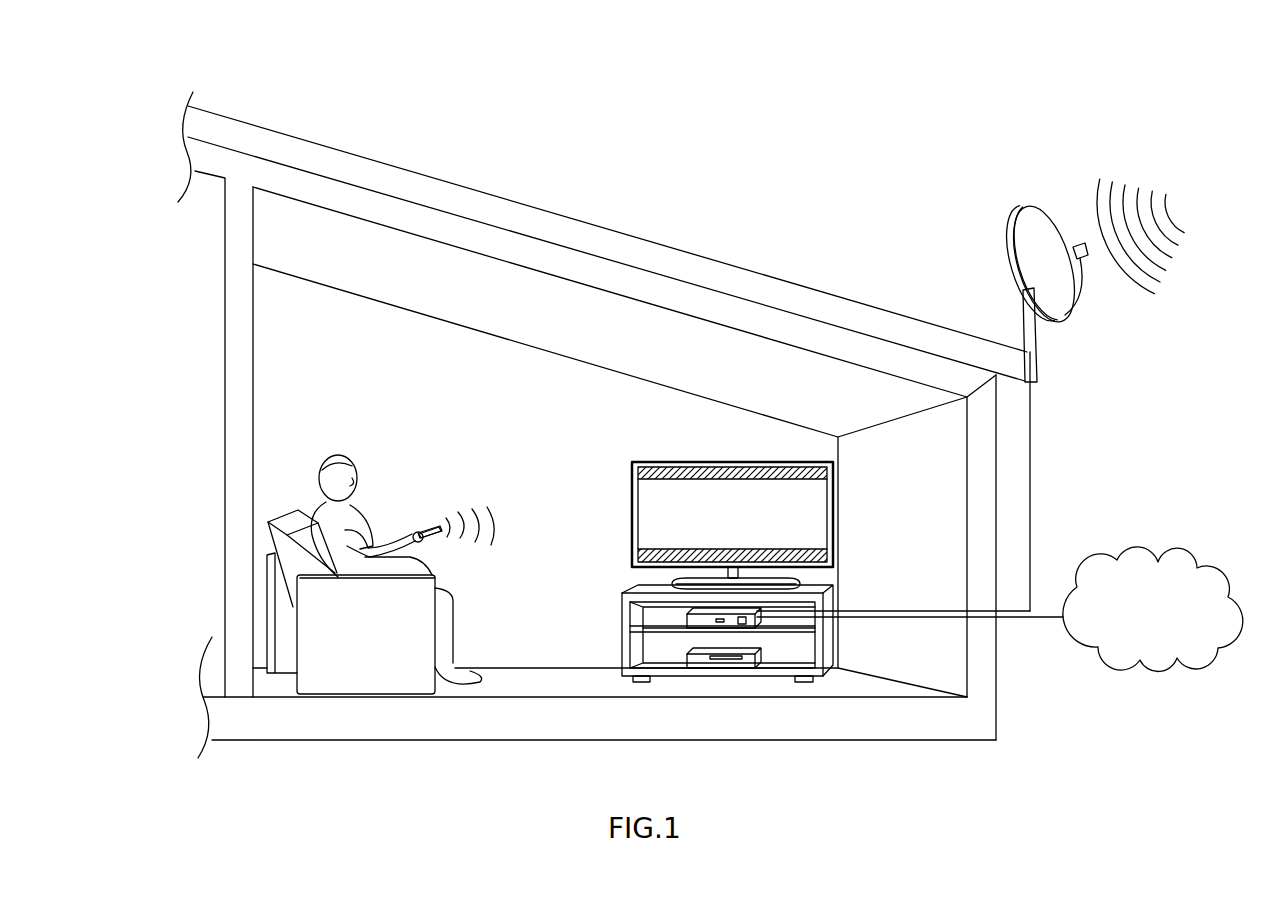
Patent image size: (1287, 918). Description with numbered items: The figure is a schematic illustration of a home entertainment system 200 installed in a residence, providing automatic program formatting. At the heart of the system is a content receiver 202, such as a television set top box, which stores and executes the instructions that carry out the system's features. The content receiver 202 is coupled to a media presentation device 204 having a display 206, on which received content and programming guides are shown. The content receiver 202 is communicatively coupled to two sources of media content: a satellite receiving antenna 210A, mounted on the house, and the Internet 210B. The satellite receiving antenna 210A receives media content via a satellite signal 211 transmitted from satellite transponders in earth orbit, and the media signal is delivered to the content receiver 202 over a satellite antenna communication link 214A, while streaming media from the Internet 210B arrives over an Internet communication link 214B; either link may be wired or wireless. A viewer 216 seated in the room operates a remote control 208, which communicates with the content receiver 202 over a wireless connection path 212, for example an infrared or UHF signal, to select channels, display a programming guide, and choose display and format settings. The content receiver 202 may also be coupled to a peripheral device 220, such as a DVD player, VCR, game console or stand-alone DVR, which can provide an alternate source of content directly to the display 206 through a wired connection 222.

The home entertainment system 200 is at (952, 122).
The content receiver 202 is at (687, 616).
The media presentation device 204 is at (707, 457).
The display 206 is at (662, 502).
The remote control 208 is at (430, 528).
The satellite receiving antenna 210A is at (1040, 228).
The Internet 210B is at (1166, 553).
The satellite signal 211 is at (1151, 181).
The wireless connection path 212 is at (503, 517).
The satellite antenna communication link 214A is at (1034, 487).
The Internet communication link 214B is at (1017, 620).
The viewer 216 is at (341, 452).
The peripheral device 220 is at (687, 654).
The wired connection 222 is at (632, 587).